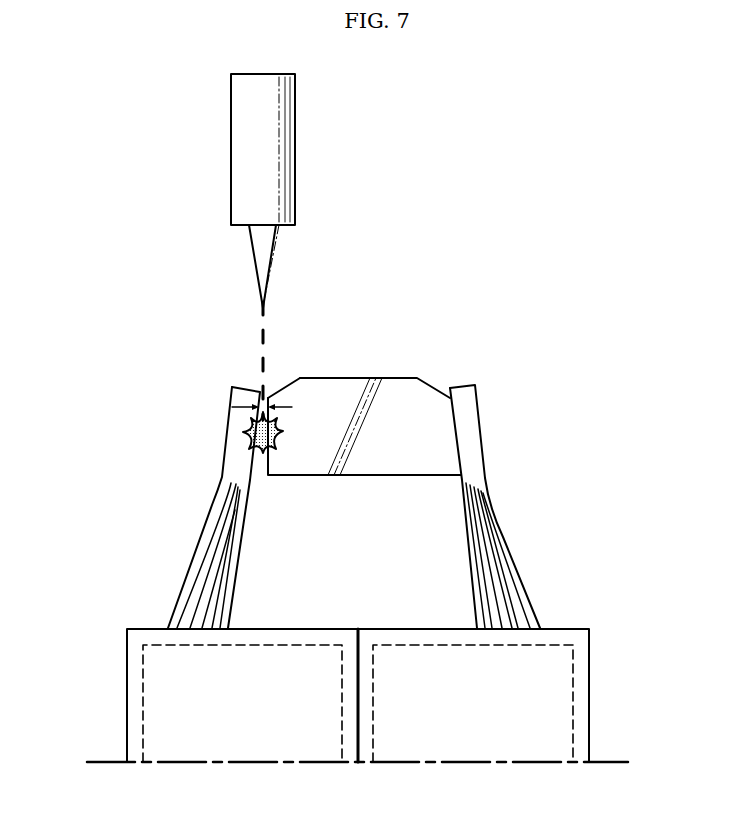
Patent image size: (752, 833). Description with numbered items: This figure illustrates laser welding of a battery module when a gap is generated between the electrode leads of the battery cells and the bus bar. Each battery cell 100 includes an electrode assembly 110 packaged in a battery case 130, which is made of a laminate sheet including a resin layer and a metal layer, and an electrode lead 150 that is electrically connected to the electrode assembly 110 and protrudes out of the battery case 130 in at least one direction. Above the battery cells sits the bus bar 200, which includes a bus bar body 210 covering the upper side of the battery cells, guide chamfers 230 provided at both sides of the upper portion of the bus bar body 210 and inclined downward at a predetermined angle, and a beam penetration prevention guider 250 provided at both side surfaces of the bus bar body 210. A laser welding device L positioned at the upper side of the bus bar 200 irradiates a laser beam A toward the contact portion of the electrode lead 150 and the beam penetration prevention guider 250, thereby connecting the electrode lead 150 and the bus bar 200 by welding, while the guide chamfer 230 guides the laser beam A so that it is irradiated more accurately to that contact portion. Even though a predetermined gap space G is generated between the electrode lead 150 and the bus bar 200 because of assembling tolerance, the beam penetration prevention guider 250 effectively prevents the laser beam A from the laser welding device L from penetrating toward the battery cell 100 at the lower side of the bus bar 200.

The battery cell 100 is at (368, 573).
The electrode assembly 110 is at (143, 661).
The battery case 130 is at (127, 700).
The electrode lead 150 is at (235, 428).
The bus bar 200 is at (364, 386).
The bus bar body 210 is at (343, 388).
The guide chamfer 230 is at (281, 390).
The beam penetration prevention guider 250 is at (259, 455).
The laser welding device L is at (233, 140).
The laser beam A is at (261, 330).
The gap space G is at (269, 407).